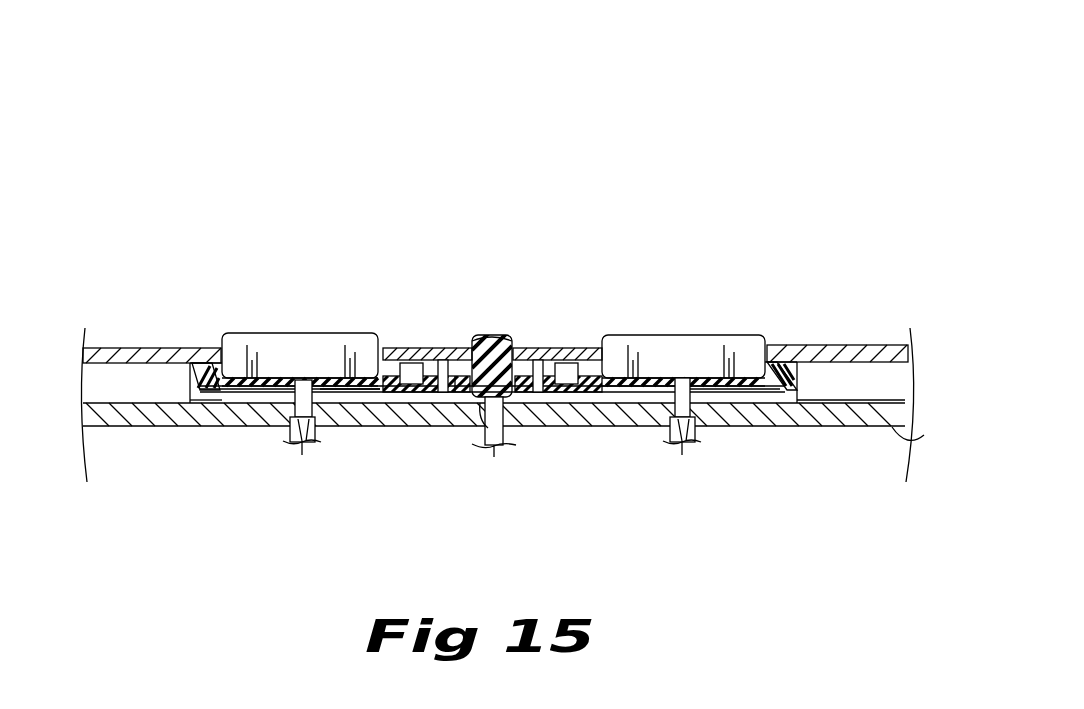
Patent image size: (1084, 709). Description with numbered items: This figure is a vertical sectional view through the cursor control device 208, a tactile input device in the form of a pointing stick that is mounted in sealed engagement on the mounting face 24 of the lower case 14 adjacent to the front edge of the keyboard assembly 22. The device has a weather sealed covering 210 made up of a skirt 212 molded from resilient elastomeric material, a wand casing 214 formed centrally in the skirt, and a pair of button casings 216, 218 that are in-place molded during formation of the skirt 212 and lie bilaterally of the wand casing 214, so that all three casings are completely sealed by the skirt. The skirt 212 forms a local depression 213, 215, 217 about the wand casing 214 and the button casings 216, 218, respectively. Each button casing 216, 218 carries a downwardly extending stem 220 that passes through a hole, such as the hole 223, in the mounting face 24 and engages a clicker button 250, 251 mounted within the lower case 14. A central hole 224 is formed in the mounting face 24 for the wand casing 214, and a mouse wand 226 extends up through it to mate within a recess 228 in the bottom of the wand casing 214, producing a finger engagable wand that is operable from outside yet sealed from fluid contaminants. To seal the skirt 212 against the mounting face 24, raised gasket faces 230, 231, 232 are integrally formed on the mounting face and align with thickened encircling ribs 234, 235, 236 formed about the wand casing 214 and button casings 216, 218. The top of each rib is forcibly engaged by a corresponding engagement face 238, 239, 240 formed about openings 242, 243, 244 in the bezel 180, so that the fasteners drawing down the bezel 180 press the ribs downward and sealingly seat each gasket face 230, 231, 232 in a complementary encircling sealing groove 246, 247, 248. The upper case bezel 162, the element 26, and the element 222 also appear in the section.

The cursor control device 208 is at (507, 138).
The lower case 14 is at (214, 255).
The keyboard assembly 22 is at (301, 200).
The bezel 162 is at (136, 348).
The encircling rib 235 is at (201, 365).
The opening 243 is at (238, 333).
The button casing 216 is at (296, 345).
The engagement face 239 is at (390, 348).
The encircling rib 234 is at (437, 362).
The opening 242 is at (480, 335).
The wand casing 214 is at (493, 335).
The engagement face 238 is at (552, 348).
The encircling rib 236 is at (574, 348).
The engagement face 240 is at (629, 335).
The button casing 218 is at (682, 335).
The weather sealed covering 210 is at (744, 261).
The opening 244 is at (750, 335).
The skirt 212 is at (778, 345).
The bezel 180 is at (868, 345).
The plate end 26 is at (917, 419).
The mounting face 24 is at (898, 440).
The sealing groove 247 is at (187, 427).
The raised gasket face 231 is at (203, 427).
The stem 220 is at (292, 442).
The clicker button 250 is at (302, 442).
The thin layer segment 222 is at (331, 427).
The local depression 215 is at (373, 427).
The raised gasket face 230 is at (428, 427).
The sealing groove 246 is at (447, 425).
The central hole 224 is at (463, 427).
The recess 228 is at (486, 445).
The mouse wand 226 is at (497, 446).
The local depression 213 is at (535, 427).
The raised gasket face 232 is at (588, 427).
The clicker button 251 is at (684, 442).
The hole 223 is at (708, 427).
The local depression 217 is at (752, 427).
The sealing groove 248 is at (790, 430).